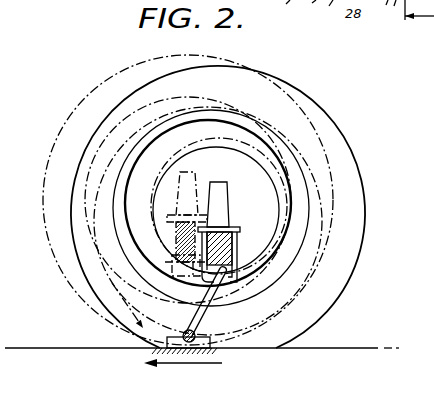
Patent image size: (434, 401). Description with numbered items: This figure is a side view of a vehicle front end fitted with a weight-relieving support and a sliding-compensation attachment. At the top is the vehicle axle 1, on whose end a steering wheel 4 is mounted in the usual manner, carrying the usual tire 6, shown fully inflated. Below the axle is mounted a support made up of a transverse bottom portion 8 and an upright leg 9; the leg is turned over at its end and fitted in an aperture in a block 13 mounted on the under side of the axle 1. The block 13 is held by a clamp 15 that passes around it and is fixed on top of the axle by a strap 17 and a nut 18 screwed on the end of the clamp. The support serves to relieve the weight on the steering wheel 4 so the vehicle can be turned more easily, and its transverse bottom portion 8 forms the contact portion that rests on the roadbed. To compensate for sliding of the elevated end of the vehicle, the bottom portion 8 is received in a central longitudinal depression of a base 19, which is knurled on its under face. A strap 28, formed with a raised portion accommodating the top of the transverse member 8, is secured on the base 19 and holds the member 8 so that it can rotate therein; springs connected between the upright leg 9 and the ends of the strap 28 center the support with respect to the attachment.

The vehicle axle 1 is at (243, 252).
The steering wheel 4 is at (306, 170).
The tire 6 is at (308, 104).
The transverse bottom portion 8 is at (206, 342).
The upright leg 9 is at (186, 233).
The block 13 is at (244, 282).
The clamp 15 is at (271, 265).
The strap 17 is at (241, 236).
The nut 18 is at (236, 227).
The base 19 is at (212, 350).
The strap 28 is at (177, 334).